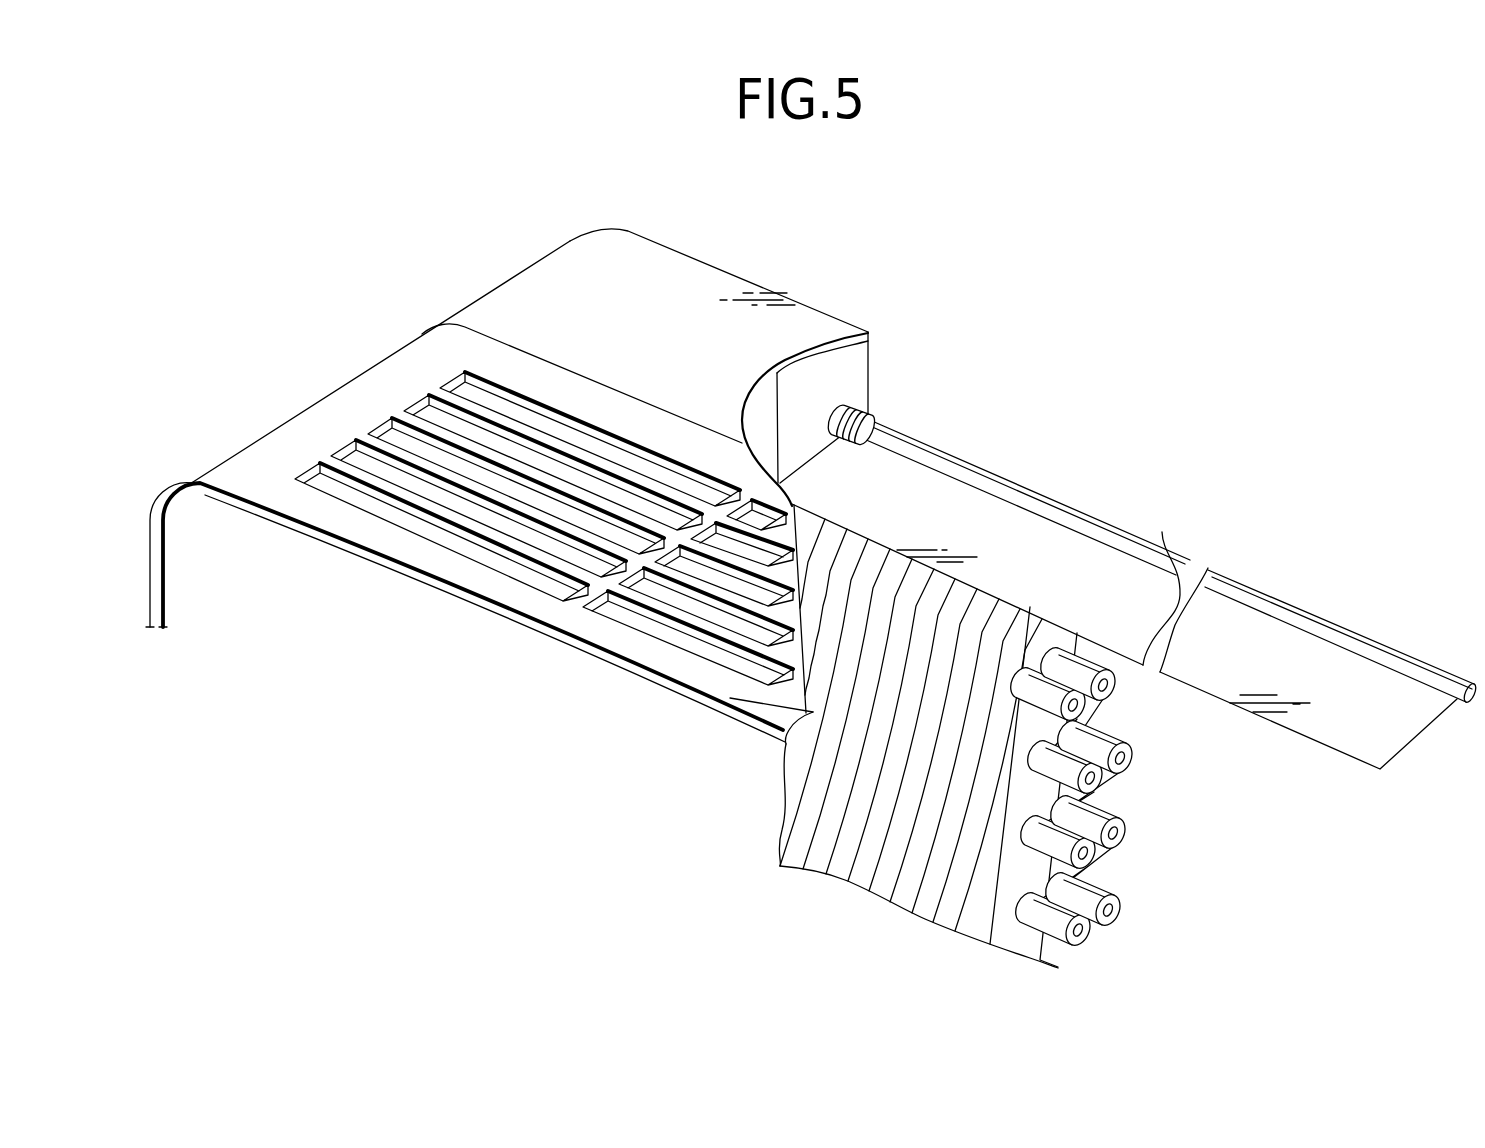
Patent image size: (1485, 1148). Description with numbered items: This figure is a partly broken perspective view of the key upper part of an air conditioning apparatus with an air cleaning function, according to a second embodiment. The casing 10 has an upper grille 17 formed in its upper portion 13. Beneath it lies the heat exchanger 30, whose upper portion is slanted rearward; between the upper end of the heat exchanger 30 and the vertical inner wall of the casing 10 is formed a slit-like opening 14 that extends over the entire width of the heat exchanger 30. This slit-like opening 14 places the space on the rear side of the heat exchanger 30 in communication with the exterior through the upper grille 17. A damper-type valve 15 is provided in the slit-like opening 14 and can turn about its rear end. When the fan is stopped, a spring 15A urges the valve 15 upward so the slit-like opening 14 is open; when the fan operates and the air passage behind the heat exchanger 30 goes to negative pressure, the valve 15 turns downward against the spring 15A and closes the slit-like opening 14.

The casing 10 is at (702, 272).
The upper portion 13 is at (583, 396).
The slit-like opening 14 is at (1180, 580).
The valve 15 is at (1036, 540).
The spring 15A is at (862, 405).
The upper grille 17 is at (440, 453).
The heat exchanger 30 is at (806, 786).